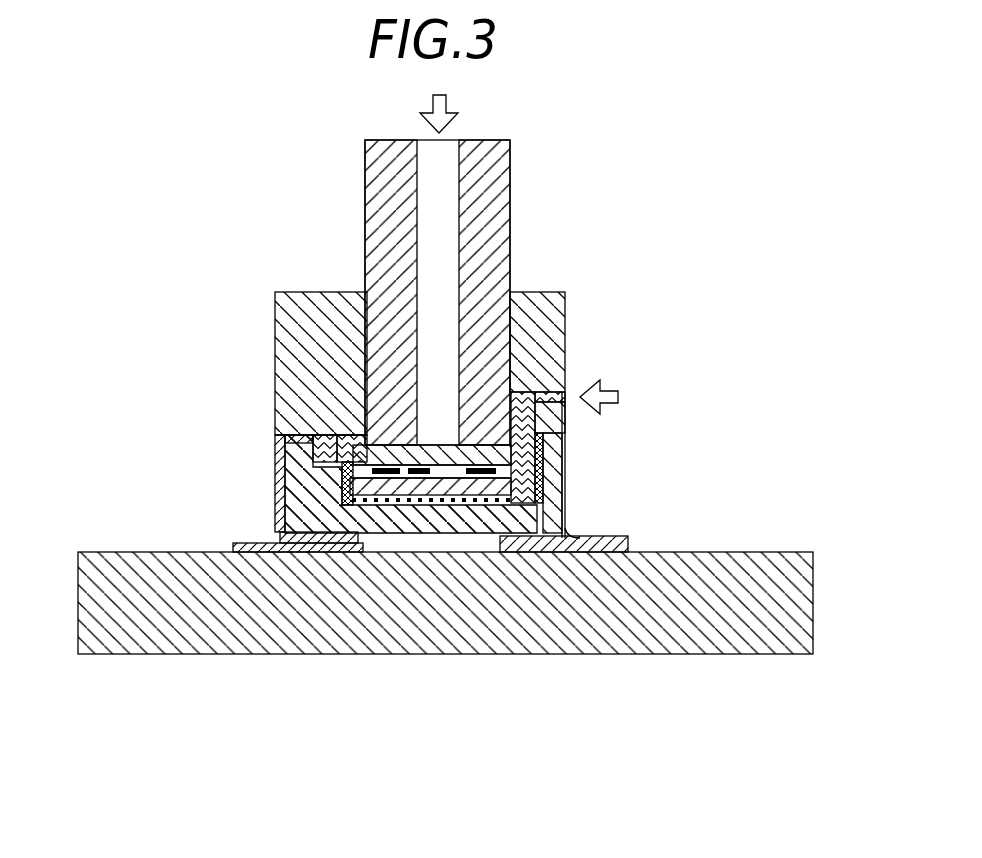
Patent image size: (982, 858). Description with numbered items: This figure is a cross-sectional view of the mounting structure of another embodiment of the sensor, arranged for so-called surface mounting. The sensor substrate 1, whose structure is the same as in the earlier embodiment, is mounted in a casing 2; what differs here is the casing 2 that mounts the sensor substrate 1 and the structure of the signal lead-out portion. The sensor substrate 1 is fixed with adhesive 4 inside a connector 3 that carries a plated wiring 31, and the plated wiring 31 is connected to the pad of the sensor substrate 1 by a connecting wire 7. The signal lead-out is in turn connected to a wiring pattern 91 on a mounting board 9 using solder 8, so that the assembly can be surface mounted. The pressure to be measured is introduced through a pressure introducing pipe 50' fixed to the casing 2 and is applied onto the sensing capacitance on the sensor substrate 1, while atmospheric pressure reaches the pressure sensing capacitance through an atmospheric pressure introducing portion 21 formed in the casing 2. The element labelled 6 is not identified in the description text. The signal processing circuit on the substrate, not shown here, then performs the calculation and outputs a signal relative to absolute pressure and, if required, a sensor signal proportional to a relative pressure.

The pressure introducing pipe 50' is at (502, 292).
The casing 2 is at (300, 291).
The atmospheric pressure introducing portion 21 is at (567, 395).
The sensor substrate 1 is at (567, 480).
The connector 3 is at (568, 513).
The plated wiring 31 is at (277, 437).
The adhesive 4 is at (340, 498).
The sealing member 6 is at (360, 440).
The connecting wire 7 is at (322, 442).
The solder 8 is at (272, 533).
The wiring pattern 91 is at (232, 545).
The mounting board 9 is at (450, 656).